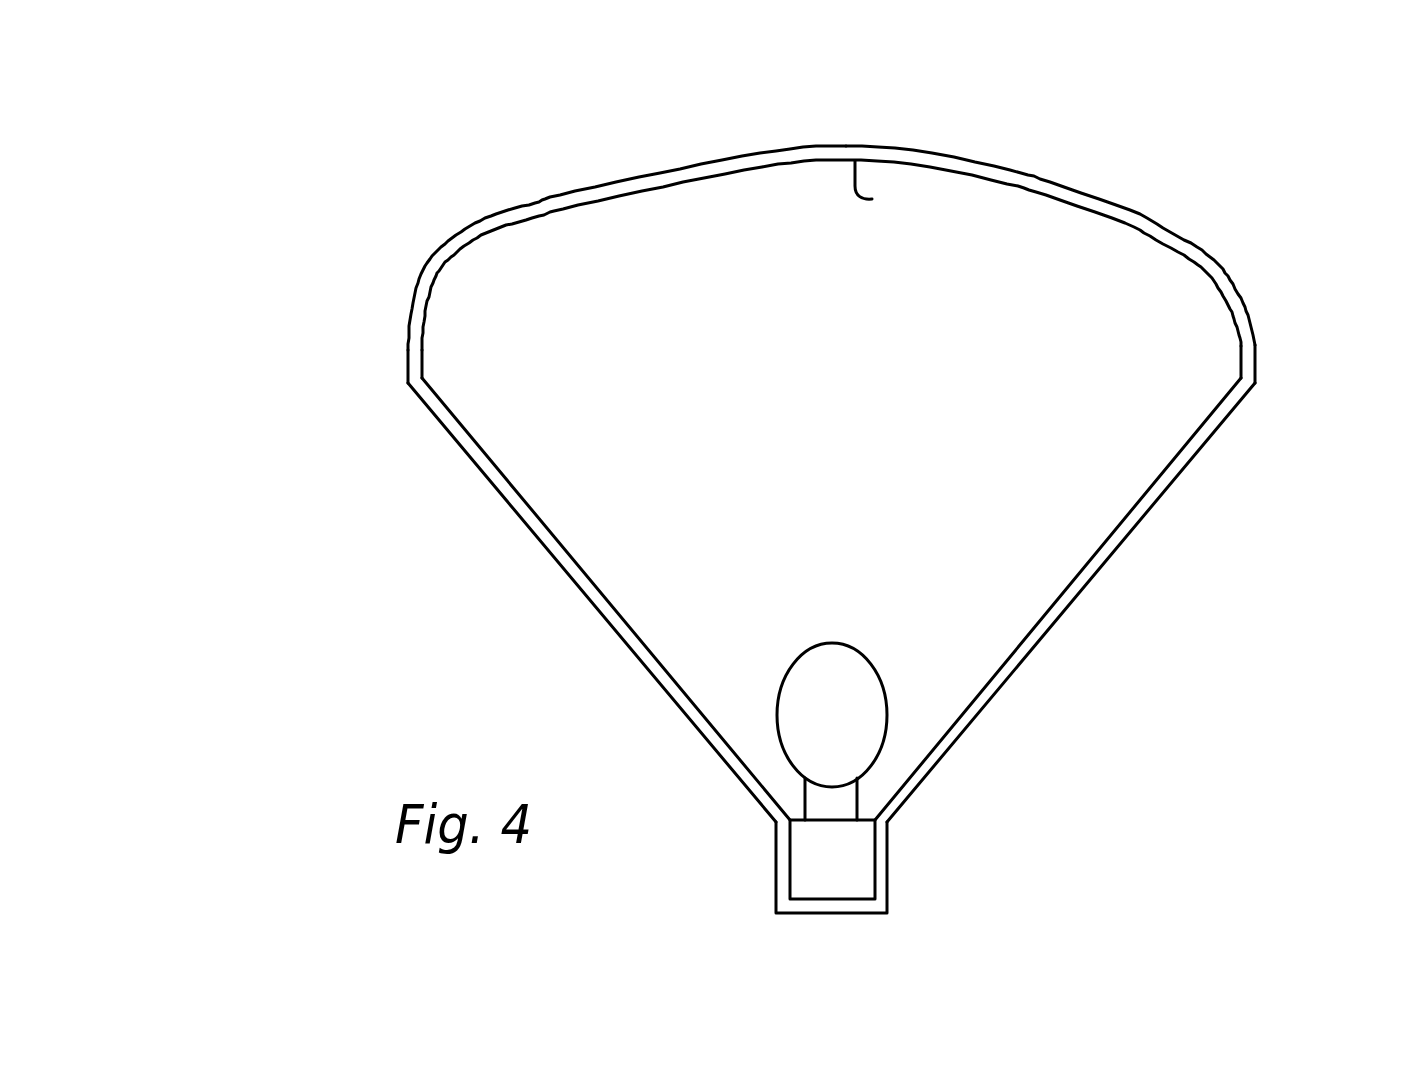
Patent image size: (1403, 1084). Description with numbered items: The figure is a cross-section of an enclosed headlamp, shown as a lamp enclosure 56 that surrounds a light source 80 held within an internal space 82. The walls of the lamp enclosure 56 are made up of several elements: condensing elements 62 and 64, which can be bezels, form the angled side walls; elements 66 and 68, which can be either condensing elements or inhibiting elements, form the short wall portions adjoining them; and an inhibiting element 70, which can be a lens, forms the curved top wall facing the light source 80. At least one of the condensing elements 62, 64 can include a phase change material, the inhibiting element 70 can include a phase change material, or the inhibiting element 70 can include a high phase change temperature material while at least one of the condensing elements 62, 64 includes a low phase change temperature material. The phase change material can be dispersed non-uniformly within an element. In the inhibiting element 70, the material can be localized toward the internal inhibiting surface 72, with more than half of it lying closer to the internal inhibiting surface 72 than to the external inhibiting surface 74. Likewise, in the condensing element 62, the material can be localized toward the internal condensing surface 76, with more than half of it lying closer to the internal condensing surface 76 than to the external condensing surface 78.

The lamp enclosure 56 is at (282, 198).
The condensing element 62 is at (1103, 557).
The condensing element 64 is at (560, 557).
The element 66 is at (1247, 350).
The element 68 is at (415, 350).
The inhibiting element 70 is at (765, 153).
The internal inhibiting surface 72 is at (872, 199).
The external inhibiting surface 74 is at (1085, 192).
The internal condensing surface 76 is at (990, 677).
The external condensing surface 78 is at (953, 747).
The light source 80 is at (818, 720).
The internal space 82 is at (757, 350).